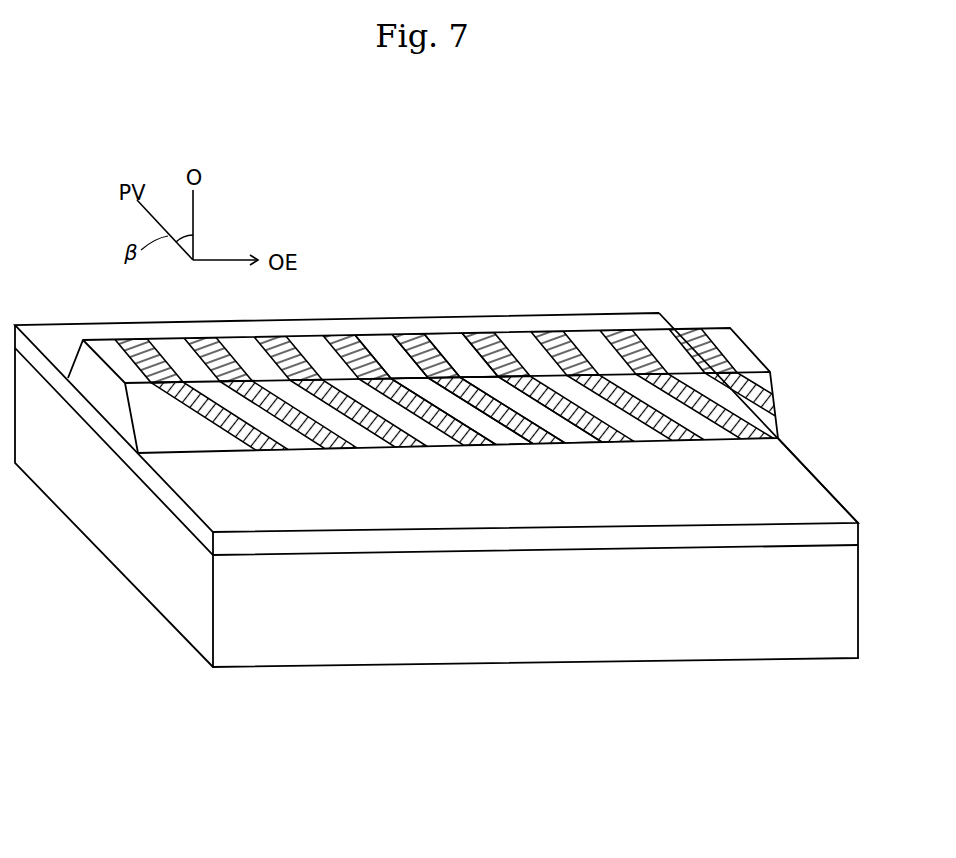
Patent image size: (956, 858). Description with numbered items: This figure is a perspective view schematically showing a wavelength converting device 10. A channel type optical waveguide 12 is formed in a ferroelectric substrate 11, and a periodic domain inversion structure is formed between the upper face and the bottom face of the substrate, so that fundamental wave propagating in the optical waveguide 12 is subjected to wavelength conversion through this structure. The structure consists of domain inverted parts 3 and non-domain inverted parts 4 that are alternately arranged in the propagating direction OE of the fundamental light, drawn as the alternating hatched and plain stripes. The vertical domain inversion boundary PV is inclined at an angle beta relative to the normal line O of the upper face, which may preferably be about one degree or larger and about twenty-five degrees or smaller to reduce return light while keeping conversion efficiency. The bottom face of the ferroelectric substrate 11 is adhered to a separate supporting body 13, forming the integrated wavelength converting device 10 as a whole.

The domain inverted parts 3 is at (413, 345).
The non-domain inverted parts 4 is at (378, 345).
The wavelength converting device 10 is at (743, 286).
The ferroelectric substrate 11 is at (675, 298).
The channel type optical waveguide 12 is at (638, 328).
The supporting body 13 is at (648, 661).